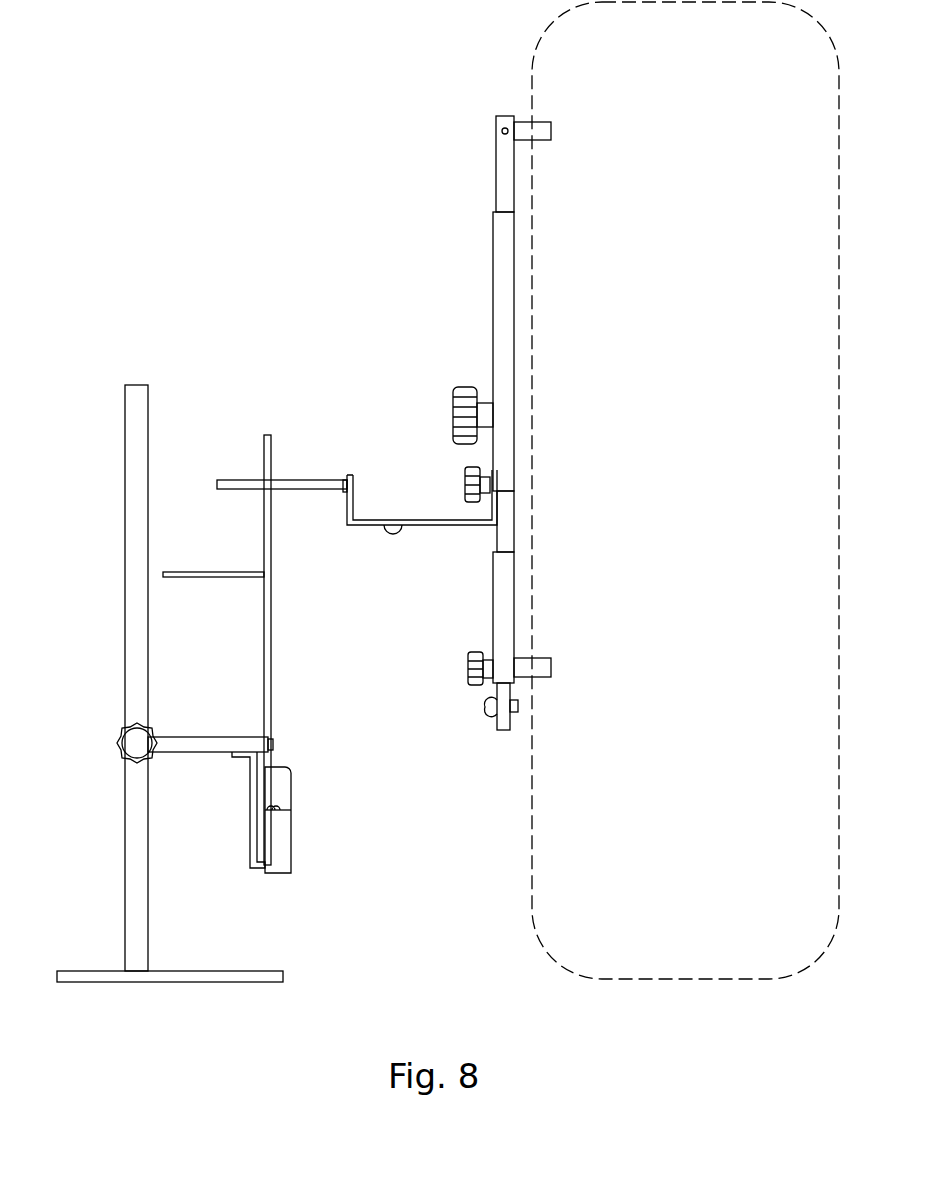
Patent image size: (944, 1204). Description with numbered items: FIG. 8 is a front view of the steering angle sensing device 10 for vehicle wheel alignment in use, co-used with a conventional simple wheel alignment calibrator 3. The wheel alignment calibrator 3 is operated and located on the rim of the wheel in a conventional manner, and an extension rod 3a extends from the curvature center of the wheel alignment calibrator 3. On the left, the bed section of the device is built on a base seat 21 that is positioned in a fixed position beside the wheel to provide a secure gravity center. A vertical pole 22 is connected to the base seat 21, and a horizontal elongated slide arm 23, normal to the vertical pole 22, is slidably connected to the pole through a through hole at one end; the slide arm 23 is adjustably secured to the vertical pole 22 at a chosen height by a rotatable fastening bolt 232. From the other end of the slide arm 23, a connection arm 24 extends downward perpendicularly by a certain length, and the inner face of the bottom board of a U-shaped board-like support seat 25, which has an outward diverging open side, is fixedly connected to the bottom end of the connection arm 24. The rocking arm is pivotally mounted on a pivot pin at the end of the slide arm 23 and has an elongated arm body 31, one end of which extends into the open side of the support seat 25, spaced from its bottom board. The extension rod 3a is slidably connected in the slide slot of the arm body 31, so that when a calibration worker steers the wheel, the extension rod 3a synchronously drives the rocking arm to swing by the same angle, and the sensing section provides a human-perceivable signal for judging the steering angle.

The wheel alignment calibrator 3 is at (483, 162).
The extension rod 3a is at (305, 478).
The steering angle sensing device 10 is at (113, 370).
The base seat 21 is at (167, 982).
The vertical pole 22 is at (137, 446).
The slide arm 23 is at (208, 735).
The rotatable fastening bolt 232 is at (138, 745).
The connection arm 24 is at (250, 813).
The support seat 25 is at (277, 872).
The arm body 31 is at (271, 653).